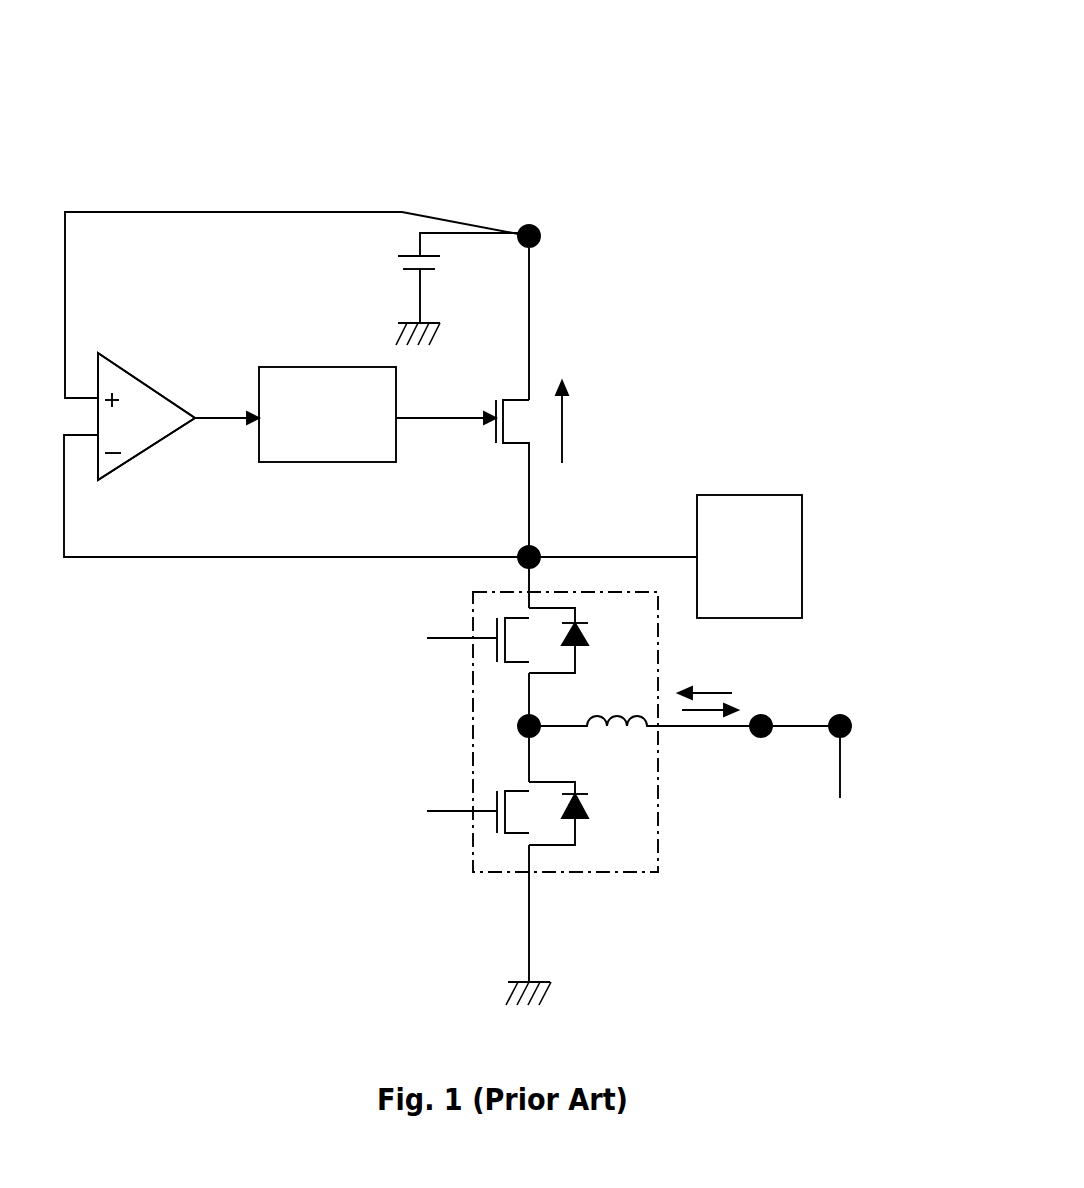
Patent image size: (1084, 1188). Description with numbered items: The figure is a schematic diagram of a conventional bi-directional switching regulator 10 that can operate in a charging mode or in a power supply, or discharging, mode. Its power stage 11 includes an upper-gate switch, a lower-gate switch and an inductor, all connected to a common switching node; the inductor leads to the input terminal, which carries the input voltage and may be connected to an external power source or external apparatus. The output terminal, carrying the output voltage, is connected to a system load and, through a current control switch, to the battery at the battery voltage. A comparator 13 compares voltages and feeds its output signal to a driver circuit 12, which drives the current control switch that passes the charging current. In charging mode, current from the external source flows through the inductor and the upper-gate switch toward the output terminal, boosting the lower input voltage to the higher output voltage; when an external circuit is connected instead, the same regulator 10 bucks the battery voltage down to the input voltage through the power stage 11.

The bi-directional switching regulator 10 is at (750, 74).
The power stage 11 is at (563, 872).
The driver circuit 12 is at (341, 455).
The comparator 13 is at (145, 382).